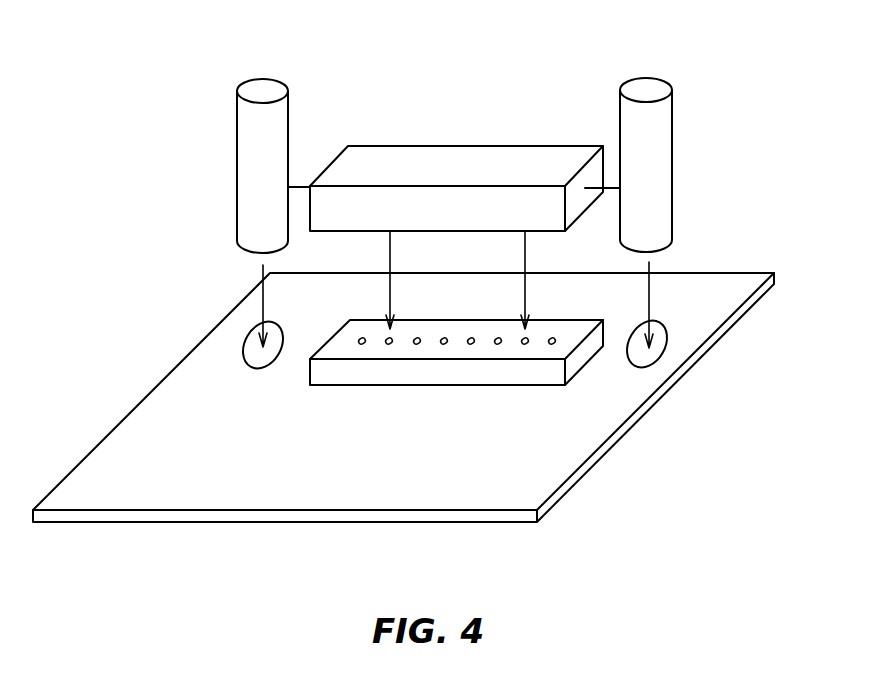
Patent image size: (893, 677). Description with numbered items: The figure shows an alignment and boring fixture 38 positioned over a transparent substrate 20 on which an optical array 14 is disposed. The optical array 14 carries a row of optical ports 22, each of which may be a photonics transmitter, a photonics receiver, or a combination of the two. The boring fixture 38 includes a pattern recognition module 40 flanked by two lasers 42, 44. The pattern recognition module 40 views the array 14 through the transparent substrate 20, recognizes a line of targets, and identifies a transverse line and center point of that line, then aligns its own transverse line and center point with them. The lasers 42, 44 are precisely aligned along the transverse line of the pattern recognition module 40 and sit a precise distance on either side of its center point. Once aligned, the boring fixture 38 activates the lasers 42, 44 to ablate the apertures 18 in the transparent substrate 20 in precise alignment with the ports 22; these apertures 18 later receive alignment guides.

The optical array 14 is at (451, 386).
The apertures 18 is at (242, 347).
The transparent substrate 20 is at (627, 432).
The optical ports 22 is at (360, 345).
The boring fixture 38 is at (456, 179).
The pattern recognition module 40 is at (522, 146).
The laser 42 is at (245, 80).
The laser 44 is at (655, 80).